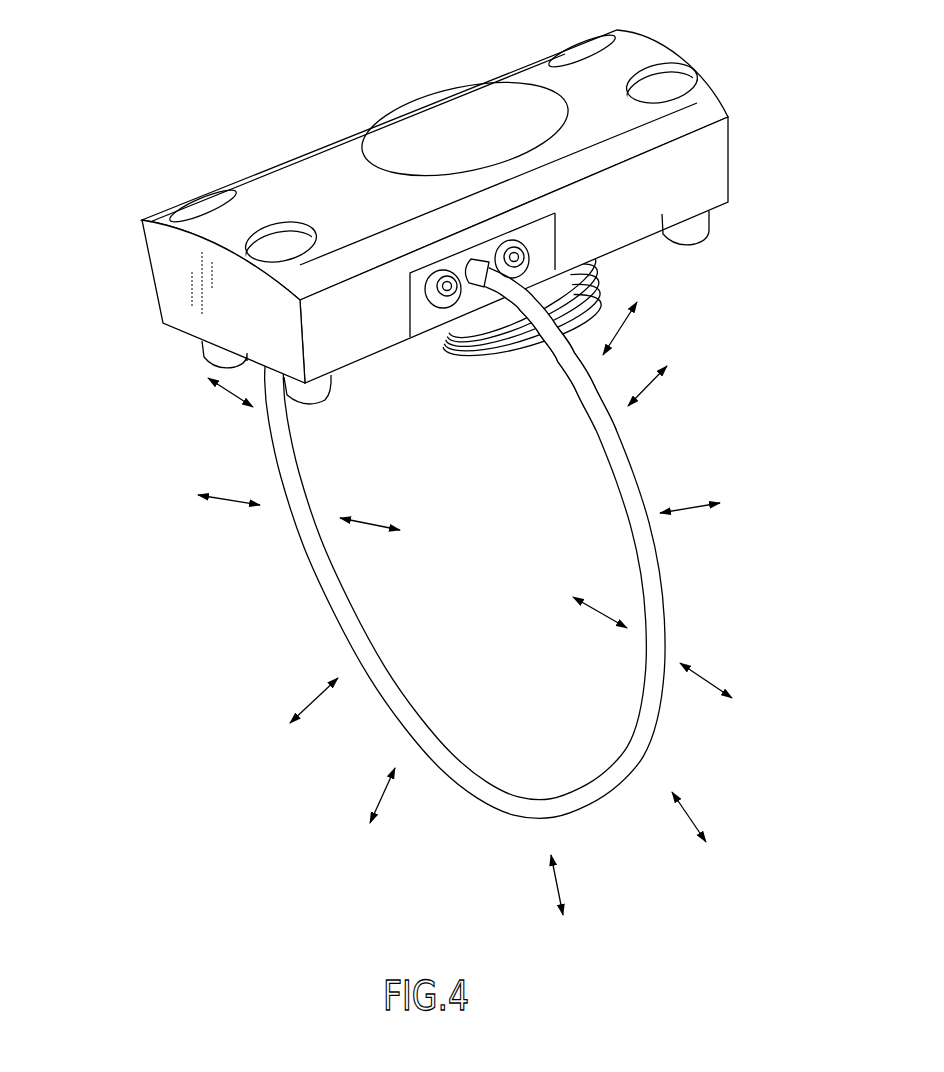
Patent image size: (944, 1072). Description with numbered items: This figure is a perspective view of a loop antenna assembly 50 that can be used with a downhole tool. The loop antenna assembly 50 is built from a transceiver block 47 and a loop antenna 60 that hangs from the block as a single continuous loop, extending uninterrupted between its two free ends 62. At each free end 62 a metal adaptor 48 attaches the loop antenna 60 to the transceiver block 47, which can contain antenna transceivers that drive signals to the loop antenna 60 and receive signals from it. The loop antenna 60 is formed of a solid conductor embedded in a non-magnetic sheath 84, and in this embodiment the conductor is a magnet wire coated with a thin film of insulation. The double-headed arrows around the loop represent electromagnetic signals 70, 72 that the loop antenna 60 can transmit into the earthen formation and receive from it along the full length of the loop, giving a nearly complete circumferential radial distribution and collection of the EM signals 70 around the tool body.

The loop antenna assembly 50 is at (395, 216).
The transceiver block 47 is at (182, 330).
The metal adaptor 48 is at (449, 295).
The free end 62 is at (500, 282).
The loop antenna 60 is at (667, 603).
The non-magnetic sheath 84 is at (325, 578).
The electromagnetic signals 70 is at (648, 390).
The electromagnetic signals 72 is at (370, 523).